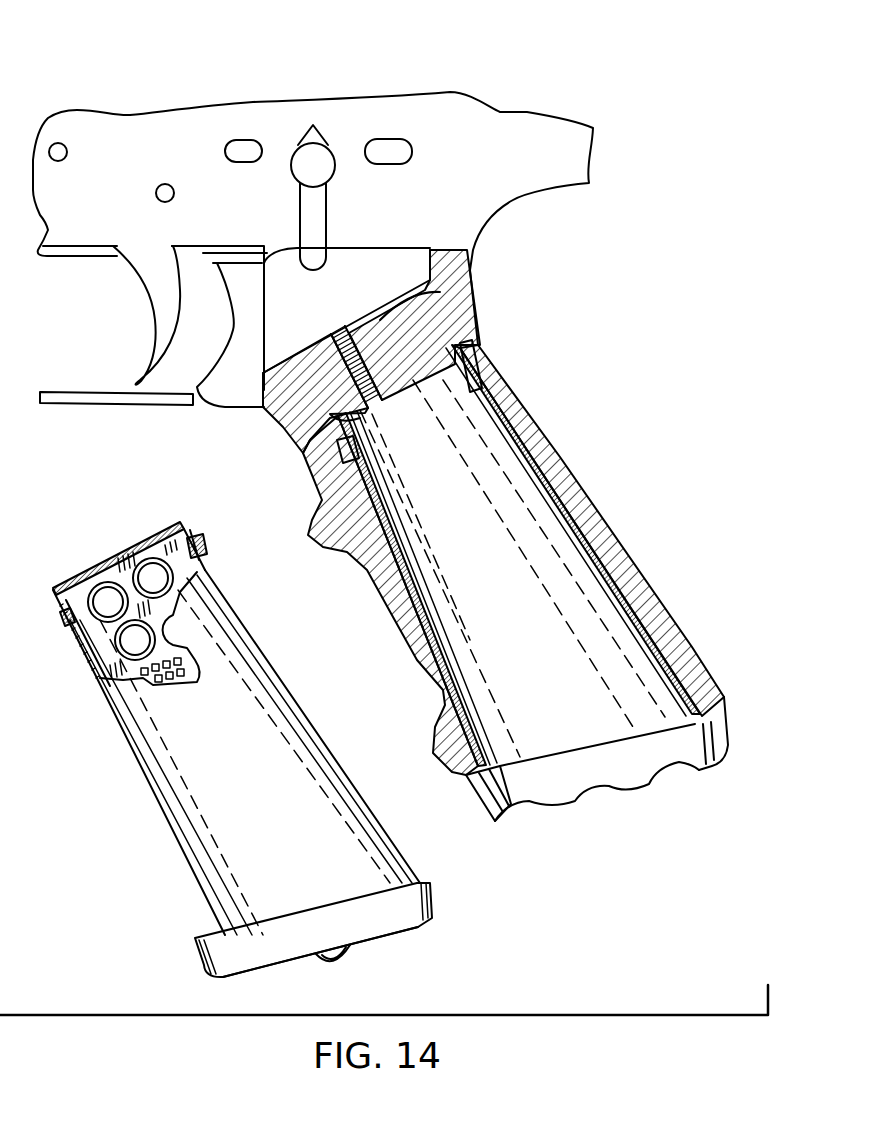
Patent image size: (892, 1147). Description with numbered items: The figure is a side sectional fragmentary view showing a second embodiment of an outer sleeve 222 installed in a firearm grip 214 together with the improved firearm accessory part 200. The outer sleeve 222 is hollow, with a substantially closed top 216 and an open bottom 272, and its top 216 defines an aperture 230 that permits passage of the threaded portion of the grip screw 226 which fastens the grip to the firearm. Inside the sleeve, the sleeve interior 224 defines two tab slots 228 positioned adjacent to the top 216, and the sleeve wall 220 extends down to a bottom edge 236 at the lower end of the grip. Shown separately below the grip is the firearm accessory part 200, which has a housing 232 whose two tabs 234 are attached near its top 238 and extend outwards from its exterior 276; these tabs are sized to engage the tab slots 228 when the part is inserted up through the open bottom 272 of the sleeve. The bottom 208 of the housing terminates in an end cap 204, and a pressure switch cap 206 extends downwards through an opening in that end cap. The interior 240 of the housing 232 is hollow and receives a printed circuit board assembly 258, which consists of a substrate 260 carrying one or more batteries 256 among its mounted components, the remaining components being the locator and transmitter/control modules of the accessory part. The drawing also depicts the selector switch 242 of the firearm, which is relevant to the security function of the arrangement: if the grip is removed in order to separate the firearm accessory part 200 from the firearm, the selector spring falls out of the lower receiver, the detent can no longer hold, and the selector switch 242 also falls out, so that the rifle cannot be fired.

The firearm accessory part 200 is at (262, 735).
The end cap 204 is at (432, 903).
The pressure switch cap 206 is at (342, 963).
The bottom of the housing 208 is at (397, 933).
The frame 214 is at (494, 95).
The top of the outer sleeve 216 is at (448, 322).
The magazine well inner surface 220 is at (590, 573).
The outer sleeve 222 is at (565, 497).
The sleeve interior 224 is at (627, 610).
The grip screw 226 is at (455, 272).
The tab slots 228 is at (484, 373).
The aperture 230 is at (327, 412).
The housing 232 is at (300, 710).
The tabs 234 is at (207, 548).
The grip bottom plate 236 is at (690, 770).
The top of the housing 238 is at (73, 585).
The interior of the housing 240 is at (100, 677).
The selector switch 242 is at (325, 180).
The batteries 256 is at (152, 576).
The printed circuit board assembly 258 is at (117, 567).
The substrate 260 is at (180, 527).
The open bottom 272 is at (710, 722).
The exterior of the housing 276 is at (262, 652).